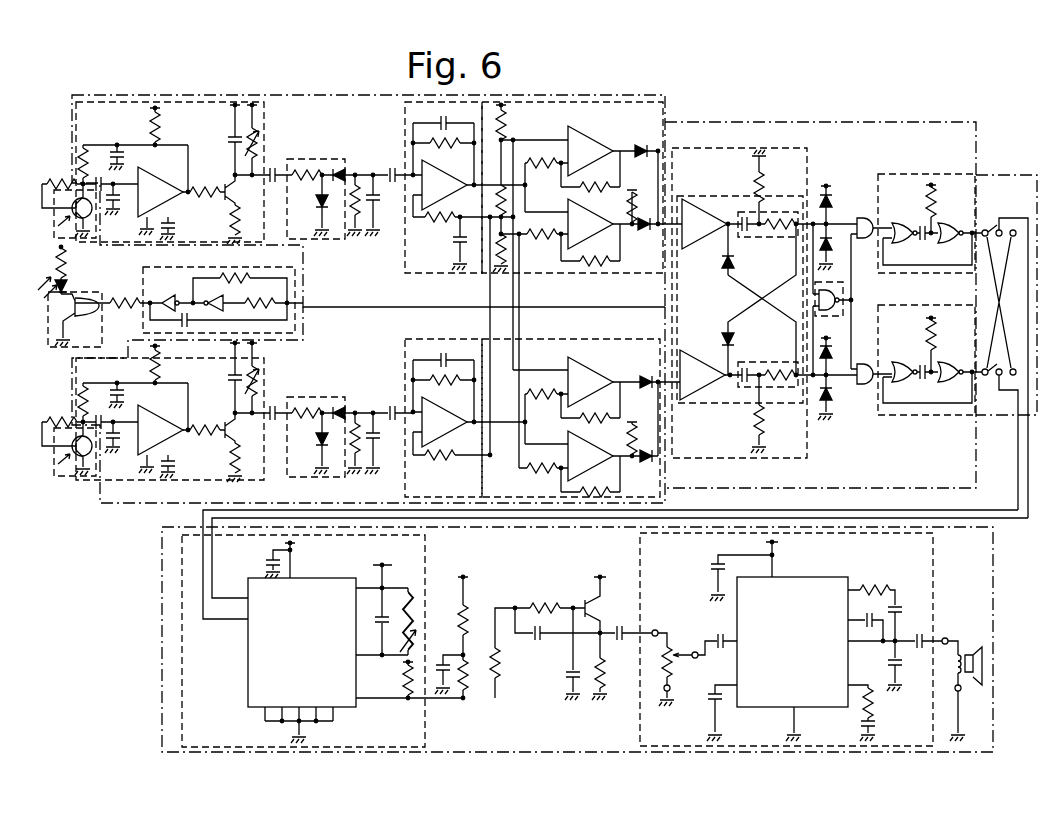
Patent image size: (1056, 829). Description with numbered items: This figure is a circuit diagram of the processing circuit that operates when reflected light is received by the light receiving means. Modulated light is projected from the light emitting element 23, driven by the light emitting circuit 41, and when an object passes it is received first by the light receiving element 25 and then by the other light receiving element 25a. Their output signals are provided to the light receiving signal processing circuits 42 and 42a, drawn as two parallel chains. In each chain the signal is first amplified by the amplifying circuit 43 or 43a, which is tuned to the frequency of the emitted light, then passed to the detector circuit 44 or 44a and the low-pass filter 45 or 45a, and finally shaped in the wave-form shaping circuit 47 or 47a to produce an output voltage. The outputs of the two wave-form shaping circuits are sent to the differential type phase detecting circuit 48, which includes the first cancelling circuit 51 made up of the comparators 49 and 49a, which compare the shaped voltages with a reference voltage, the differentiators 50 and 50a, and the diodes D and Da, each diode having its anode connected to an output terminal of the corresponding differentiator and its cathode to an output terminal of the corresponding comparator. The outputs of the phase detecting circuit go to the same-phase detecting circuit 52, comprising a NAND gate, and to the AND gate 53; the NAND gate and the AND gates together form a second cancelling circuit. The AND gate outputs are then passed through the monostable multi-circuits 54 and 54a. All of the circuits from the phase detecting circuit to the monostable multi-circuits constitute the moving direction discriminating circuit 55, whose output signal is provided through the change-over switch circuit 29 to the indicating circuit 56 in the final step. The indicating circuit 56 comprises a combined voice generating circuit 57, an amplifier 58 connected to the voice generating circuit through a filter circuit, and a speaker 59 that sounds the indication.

The light emitting element 23 is at (60, 350).
The light receiving element 25 is at (74, 478).
The light receiving element 25a is at (74, 240).
The change-over switch circuit 29 is at (992, 176).
The light emitting circuit 41 is at (143, 290).
The light receiving signal processing circuit 42 is at (667, 503).
The light receiving signal processing circuit 42a is at (668, 102).
The amplifying circuit 43 is at (266, 358).
The amplifying circuit 43a is at (266, 112).
The detector circuit 44 is at (323, 396).
The detector circuit 44a is at (323, 159).
The low-pass filter 45 is at (420, 340).
The low-pass filter 45a is at (415, 274).
The wave-form shaping circuit 47 is at (583, 340).
The wave-form shaping circuit 47a is at (563, 274).
The differential type phase detecting circuit 48 is at (740, 212).
The comparator 49 is at (703, 342).
The comparator 49a is at (700, 198).
The differentiator 50 is at (743, 388).
The differentiator 50a is at (771, 212).
The first cancelling circuit 51 is at (808, 158).
The same-phase detecting circuit 52 is at (843, 295).
The AND gate 53 is at (855, 221).
The monostable multi-circuit 54 is at (922, 306).
The monostable multi-circuit 54a is at (915, 173).
The moving direction discriminating circuit 55 is at (843, 122).
The indicating circuit 56 is at (162, 622).
The voice generating circuit 57 is at (428, 563).
The amplifier 58 is at (946, 553).
The speaker 59 is at (976, 644).
The diode D is at (741, 352).
The diode Da is at (748, 251).